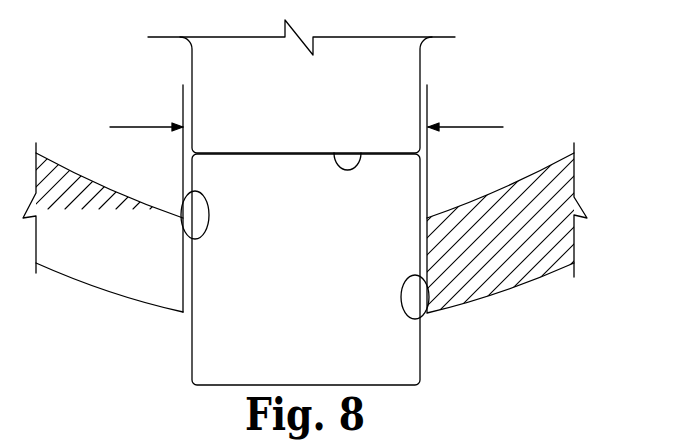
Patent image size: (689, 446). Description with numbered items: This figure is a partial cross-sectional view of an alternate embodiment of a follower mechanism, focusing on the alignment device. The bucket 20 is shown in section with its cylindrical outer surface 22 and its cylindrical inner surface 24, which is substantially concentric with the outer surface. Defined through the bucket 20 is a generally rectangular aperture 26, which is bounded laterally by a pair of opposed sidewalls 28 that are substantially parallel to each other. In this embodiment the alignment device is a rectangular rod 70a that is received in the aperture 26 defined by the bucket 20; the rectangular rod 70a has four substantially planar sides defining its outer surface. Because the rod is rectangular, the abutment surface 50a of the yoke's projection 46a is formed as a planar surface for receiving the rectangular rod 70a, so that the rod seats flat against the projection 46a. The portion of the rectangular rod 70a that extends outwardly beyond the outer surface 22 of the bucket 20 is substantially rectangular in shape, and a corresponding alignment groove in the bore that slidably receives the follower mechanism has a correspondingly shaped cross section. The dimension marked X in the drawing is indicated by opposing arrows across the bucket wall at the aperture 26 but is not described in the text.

The bucket 20 is at (115, 256).
The cylindrical outer surface 22 is at (87, 284).
The cylindrical inner surface 24 is at (542, 172).
The aperture 26 is at (173, 338).
The opposed sidewalls 28 is at (185, 192).
The projection 46a is at (312, 97).
The abutment surface 50a is at (359, 166).
The rectangular rod 70a is at (313, 272).
The dimension X is at (316, 126).